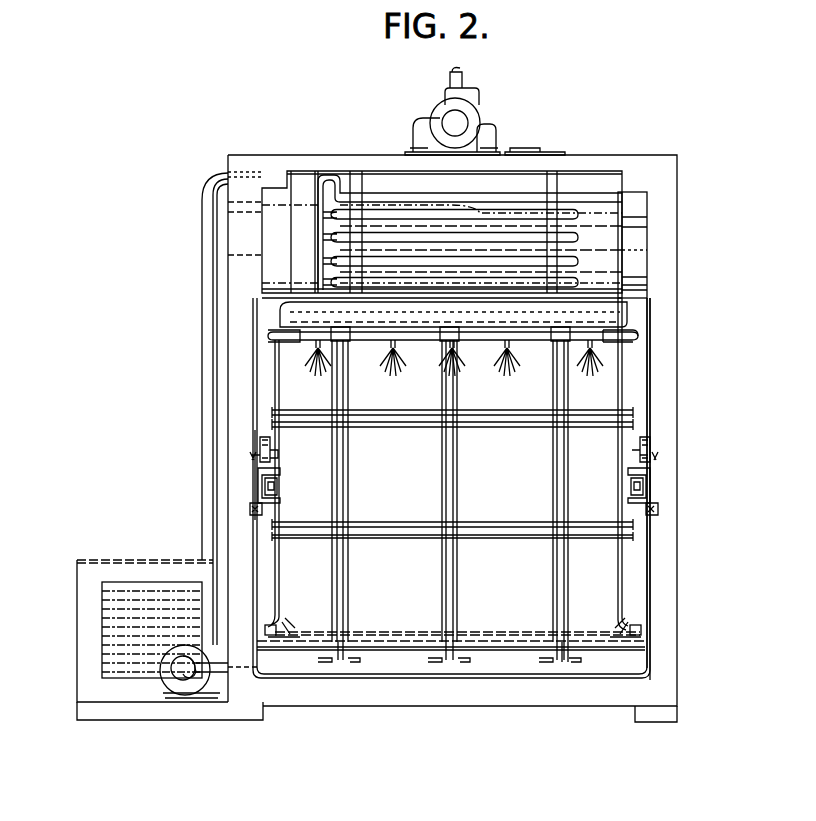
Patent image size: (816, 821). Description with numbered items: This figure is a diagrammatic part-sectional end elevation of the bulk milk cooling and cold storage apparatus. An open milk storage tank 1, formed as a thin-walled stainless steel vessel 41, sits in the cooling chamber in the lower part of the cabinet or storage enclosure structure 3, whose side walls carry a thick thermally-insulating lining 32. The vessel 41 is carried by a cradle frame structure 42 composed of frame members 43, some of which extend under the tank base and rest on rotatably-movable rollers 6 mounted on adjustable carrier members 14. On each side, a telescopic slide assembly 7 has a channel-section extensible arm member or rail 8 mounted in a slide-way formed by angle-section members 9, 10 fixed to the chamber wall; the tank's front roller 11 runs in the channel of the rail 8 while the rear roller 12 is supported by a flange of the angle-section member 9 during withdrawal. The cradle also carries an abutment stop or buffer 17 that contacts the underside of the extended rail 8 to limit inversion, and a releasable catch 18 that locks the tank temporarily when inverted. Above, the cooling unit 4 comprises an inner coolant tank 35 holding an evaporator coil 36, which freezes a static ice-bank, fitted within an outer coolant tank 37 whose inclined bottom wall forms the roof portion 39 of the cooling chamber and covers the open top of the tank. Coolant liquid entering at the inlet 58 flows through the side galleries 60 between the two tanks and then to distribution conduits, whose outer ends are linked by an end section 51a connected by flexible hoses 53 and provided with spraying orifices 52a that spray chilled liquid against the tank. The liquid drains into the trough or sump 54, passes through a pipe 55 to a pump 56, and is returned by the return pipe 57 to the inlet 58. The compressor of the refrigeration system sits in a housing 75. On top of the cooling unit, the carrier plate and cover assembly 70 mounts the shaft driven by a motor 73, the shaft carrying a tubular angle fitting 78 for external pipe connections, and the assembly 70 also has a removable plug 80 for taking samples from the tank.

The milk storage tank 1 is at (622, 363).
The cabinet or storage enclosure structure 3 is at (677, 402).
The cooling unit 4 is at (632, 190).
The rollers 6 is at (470, 660).
The telescopic slide assemblies 7 is at (256, 480).
The inner extensible arm member or rail 8 is at (262, 490).
The angle-section member 9 is at (252, 456).
The angle-section member 10 is at (252, 507).
The front roller 11 is at (272, 471).
The rear roller 12 is at (265, 437).
The carrier members 14 is at (572, 663).
The abutment stop or buffer 17 is at (265, 632).
The releasable catch 18 is at (268, 622).
The thermally-insulating lining 32 is at (672, 522).
The inner coolant tank 35 is at (635, 218).
The evaporator coil 36 is at (575, 205).
The outer coolant tank 37 is at (648, 250).
The roof portion 39 is at (633, 300).
The stainless steel vessel 41 is at (578, 458).
The cradle frame structure 42 is at (555, 556).
The frame members 43 is at (453, 572).
The end section 51a is at (398, 343).
The perforations or spraying orifices 52a is at (506, 343).
The flexible hose 53 is at (300, 343).
The trough or sump 54 is at (640, 672).
The pipe 55 is at (222, 673).
The pump 56 is at (170, 682).
The return pipe 57 is at (205, 345).
The inlet 58 is at (440, 205).
The side galleries 60 is at (268, 260).
The carrier plate and cover assembly 70 is at (418, 133).
The motor 73 is at (455, 123).
The housing 75 is at (77, 630).
The tubular angle fitting 78 is at (466, 95).
The removable plug 80 is at (512, 152).